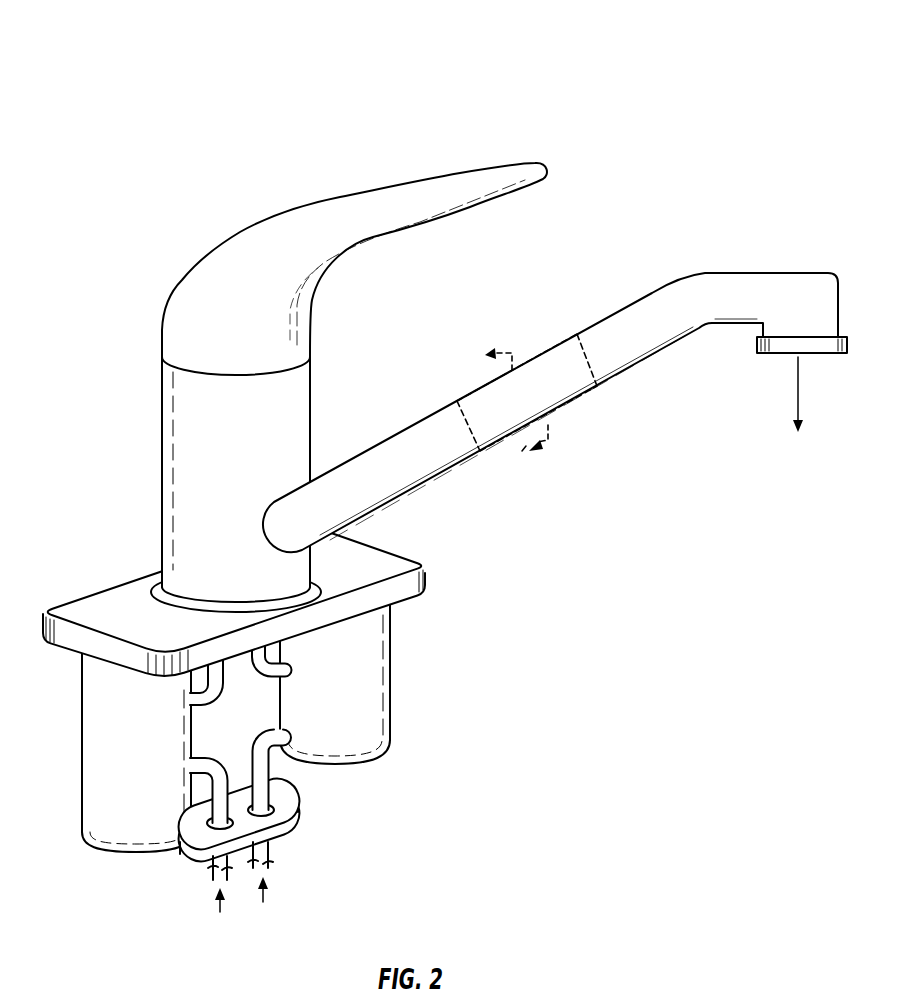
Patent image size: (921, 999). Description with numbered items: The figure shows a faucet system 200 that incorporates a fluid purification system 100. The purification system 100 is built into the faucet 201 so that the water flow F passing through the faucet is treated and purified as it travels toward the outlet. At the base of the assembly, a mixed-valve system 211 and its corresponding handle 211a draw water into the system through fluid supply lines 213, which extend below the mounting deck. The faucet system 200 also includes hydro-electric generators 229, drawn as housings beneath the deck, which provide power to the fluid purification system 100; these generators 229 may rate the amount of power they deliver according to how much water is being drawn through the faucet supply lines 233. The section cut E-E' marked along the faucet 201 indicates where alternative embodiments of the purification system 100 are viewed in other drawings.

The faucet system 200 is at (157, 62).
The handle 211a is at (210, 266).
The mixed-valve system 211 is at (290, 410).
The fluid purification system 100 is at (567, 357).
The faucet 201 is at (720, 273).
The hydro-electric generators 229 is at (96, 720).
The faucet supply lines 233 is at (277, 683).
The fluid supply lines 213 is at (213, 867).